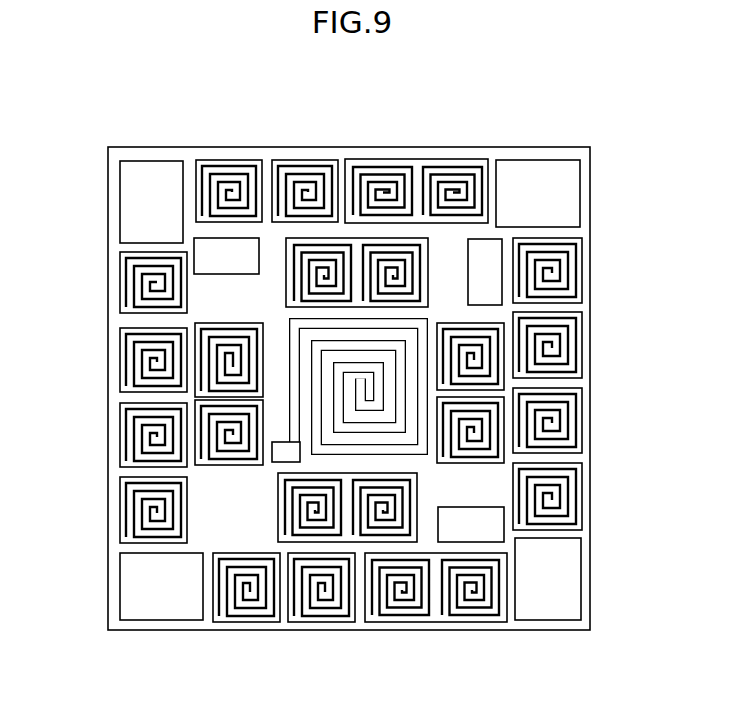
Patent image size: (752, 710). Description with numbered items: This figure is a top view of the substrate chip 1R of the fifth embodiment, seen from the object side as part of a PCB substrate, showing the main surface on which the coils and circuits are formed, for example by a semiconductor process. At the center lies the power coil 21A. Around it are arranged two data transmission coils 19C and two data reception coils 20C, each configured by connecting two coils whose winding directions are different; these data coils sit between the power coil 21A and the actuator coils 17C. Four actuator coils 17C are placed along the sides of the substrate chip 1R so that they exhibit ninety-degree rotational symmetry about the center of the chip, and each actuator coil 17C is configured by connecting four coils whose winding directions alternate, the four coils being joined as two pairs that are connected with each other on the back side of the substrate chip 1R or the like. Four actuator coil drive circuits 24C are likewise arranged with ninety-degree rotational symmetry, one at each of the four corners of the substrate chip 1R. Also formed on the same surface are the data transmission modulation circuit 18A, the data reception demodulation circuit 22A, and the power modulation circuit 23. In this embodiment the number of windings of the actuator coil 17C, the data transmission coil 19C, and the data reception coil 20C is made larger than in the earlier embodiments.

The substrate chip 1R is at (412, 150).
The actuator coil drive circuit 24C is at (155, 177).
The actuator coil 17C is at (228, 177).
The data reception coil 20C is at (341, 246).
The data transmission coil 19C is at (220, 325).
The power coil 21A is at (327, 450).
The power modulation circuit 23 is at (203, 250).
The data reception demodulation circuit 22A is at (490, 263).
The data transmission modulation circuit 18A is at (492, 533).